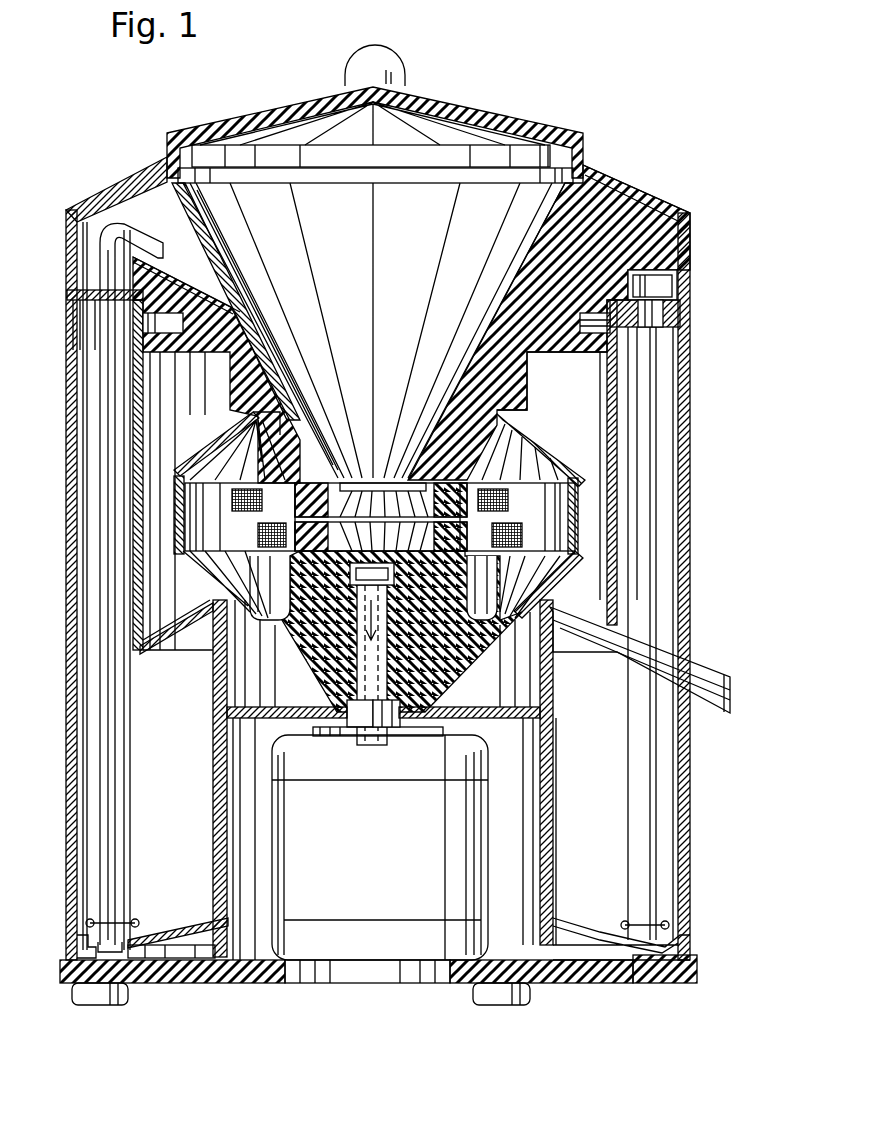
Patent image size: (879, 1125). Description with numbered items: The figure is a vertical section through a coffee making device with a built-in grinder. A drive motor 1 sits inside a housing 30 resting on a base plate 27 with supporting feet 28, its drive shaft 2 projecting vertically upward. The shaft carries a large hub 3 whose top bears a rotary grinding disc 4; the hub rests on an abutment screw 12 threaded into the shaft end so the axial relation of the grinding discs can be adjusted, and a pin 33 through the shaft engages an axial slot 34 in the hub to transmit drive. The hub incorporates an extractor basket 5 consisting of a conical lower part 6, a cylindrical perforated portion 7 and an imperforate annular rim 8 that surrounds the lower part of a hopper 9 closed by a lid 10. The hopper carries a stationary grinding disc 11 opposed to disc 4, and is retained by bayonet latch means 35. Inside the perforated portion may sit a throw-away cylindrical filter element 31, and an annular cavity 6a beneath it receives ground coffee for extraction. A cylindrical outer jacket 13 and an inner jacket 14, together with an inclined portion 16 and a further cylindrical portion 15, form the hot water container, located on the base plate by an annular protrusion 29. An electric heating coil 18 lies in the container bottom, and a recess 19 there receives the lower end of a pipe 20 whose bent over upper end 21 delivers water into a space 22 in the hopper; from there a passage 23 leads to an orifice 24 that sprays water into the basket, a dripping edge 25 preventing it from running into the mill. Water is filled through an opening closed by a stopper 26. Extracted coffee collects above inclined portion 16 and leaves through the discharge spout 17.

The drive motor 1 is at (400, 962).
The drive shaft 2 is at (362, 676).
The hub 3 is at (447, 668).
The rotary grinding disc 4 is at (465, 540).
The extractor basket 5 is at (588, 572).
The conical lower part 6 is at (558, 592).
The annular cavity 6a is at (492, 640).
The cylindrical perforated portion 7 is at (590, 494).
The annular rim 8 is at (530, 420).
The hopper 9 is at (482, 368).
The lid 10 is at (485, 118).
The stationary grinding disc 11 is at (300, 512).
The abutment screw 12 is at (312, 587).
The outer jacket 13 is at (68, 818).
The inner jacket 14 is at (146, 404).
The cylindrical portion 15 is at (211, 756).
The inclined portion 16 is at (178, 638).
The discharge spout 17 is at (703, 662).
The electric heating coil 18 is at (605, 920).
The recess 19 is at (130, 984).
The pipe 20 is at (110, 862).
The bent over upper end 21 is at (140, 236).
The space 22 is at (205, 250).
The passage 23 is at (288, 362).
The orifice 24 is at (240, 422).
The dripping edge 25 is at (258, 468).
The stopper 26 is at (667, 288).
The base plate 27 is at (596, 983).
The supporting feet 28 is at (498, 1006).
The annular protrusion 29 is at (72, 950).
The housing 30 is at (222, 905).
The cylindrical filter element 31 is at (562, 510).
The pin 33 is at (352, 722).
The axial slot 34 is at (390, 722).
The bayonet latch means 35 is at (634, 337).